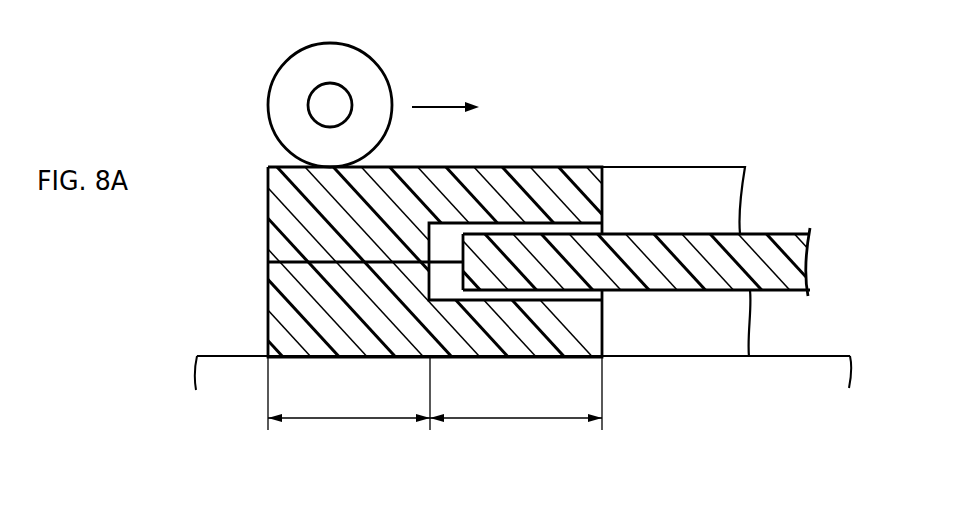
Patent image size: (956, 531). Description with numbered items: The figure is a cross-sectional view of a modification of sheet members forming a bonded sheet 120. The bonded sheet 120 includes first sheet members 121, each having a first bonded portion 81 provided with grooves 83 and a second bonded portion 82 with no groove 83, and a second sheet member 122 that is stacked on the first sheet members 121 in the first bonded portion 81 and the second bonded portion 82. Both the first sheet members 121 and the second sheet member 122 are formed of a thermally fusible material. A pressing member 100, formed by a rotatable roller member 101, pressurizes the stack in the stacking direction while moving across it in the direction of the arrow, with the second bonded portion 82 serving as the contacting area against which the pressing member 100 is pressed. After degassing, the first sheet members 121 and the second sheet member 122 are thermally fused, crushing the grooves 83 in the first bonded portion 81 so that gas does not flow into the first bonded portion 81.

The pressing member 100 is at (224, 27).
The rotatable roller member 101 is at (290, 78).
The first sheet member 121 is at (277, 203).
The groove 83 is at (449, 228).
The bonded sheet 120 is at (729, 160).
The second sheet member 122 is at (781, 242).
The second bonded portion 82 is at (350, 420).
The first bonded portion 81 is at (522, 420).